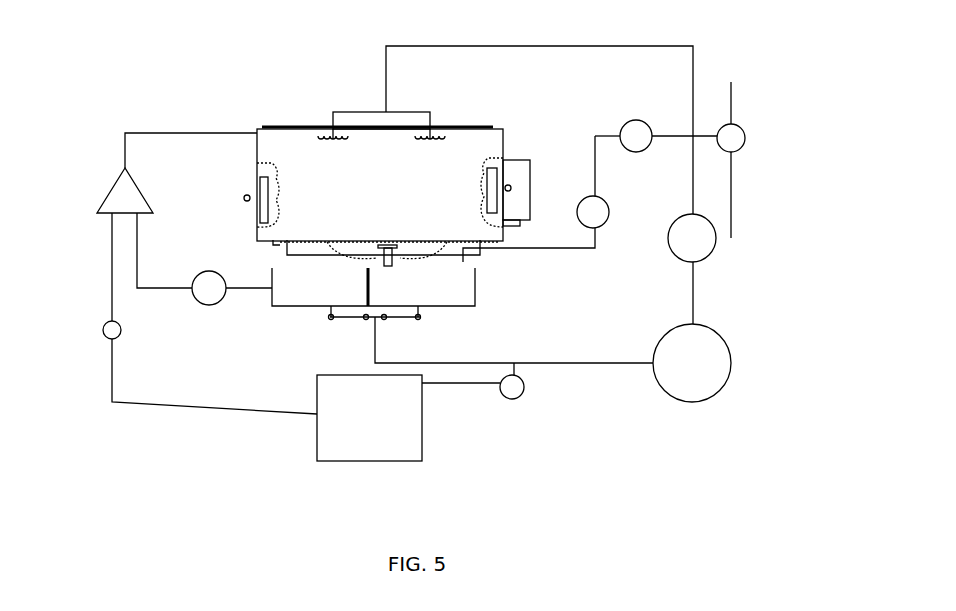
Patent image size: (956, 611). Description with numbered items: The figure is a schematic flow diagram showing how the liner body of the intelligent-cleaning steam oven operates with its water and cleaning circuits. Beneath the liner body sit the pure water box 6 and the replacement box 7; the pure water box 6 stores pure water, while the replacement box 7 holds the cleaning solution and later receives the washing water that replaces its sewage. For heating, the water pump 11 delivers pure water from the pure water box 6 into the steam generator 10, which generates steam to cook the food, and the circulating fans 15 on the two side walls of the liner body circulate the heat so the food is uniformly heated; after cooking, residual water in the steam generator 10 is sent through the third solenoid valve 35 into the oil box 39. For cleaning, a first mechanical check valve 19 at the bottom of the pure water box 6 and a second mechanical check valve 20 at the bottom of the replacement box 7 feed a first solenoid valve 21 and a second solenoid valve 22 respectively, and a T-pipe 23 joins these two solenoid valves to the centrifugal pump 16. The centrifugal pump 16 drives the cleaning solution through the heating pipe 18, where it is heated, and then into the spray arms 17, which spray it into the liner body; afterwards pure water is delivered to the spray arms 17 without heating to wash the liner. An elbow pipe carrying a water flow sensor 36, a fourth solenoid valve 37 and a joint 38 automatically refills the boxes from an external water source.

The pure water box 6 is at (310, 288).
The replacement box 7 is at (448, 283).
The steam generator 10 is at (112, 190).
The water pump 11 is at (209, 305).
The circulating fans 15 is at (257, 183).
The centrifugal pump 16 is at (713, 395).
The spray arms 17 is at (320, 128).
The heating pipe 18 is at (710, 248).
The first mechanical check valve 19 is at (331, 319).
The second mechanical check valve 20 is at (418, 319).
The first solenoid valve 21 is at (366, 319).
The second solenoid valve 22 is at (384, 319).
The T-pipe 23 is at (573, 365).
The third solenoid valve 35 is at (103, 323).
The water flow sensor 36 is at (607, 205).
The fourth solenoid valve 37 is at (636, 120).
The joint 38 is at (745, 138).
The oil box 39 is at (327, 462).